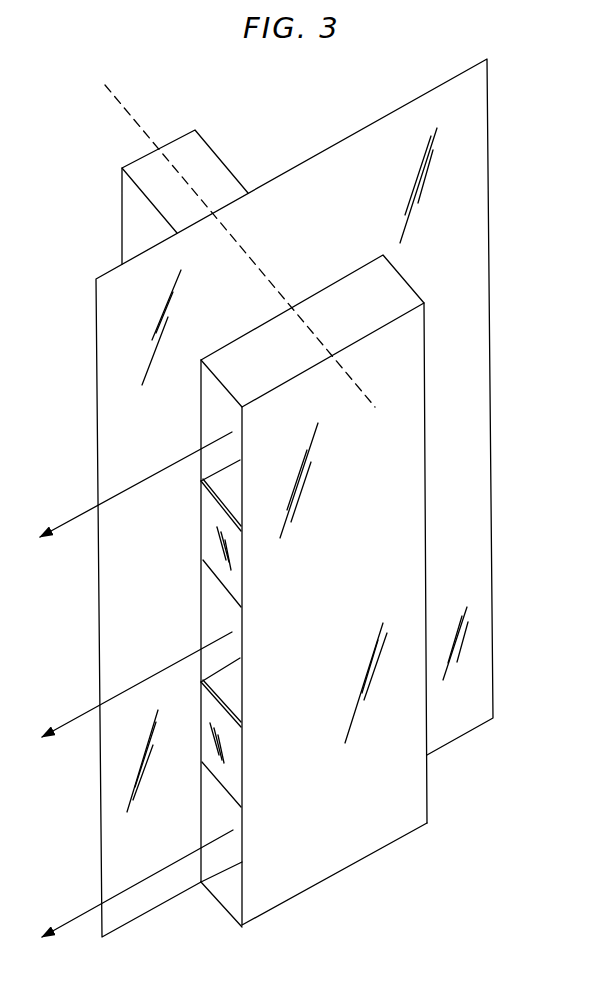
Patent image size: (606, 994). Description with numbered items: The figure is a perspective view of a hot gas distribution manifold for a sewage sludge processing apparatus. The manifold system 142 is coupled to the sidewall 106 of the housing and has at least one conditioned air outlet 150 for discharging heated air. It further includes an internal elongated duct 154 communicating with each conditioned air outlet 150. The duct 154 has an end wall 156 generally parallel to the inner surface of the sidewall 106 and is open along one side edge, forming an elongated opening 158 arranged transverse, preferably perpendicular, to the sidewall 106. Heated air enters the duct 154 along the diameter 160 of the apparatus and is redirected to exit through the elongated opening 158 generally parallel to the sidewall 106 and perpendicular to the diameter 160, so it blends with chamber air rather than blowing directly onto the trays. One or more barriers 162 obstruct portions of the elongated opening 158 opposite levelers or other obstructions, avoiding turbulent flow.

The sidewall 106 is at (491, 249).
The manifold system 142 is at (220, 158).
The conditioned air outlet 150 is at (215, 417).
The internal elongated duct 154 is at (427, 563).
The end wall 156 is at (403, 820).
The elongated opening 158 is at (233, 895).
The diameter 160 is at (128, 113).
The barrier 162 is at (212, 540).